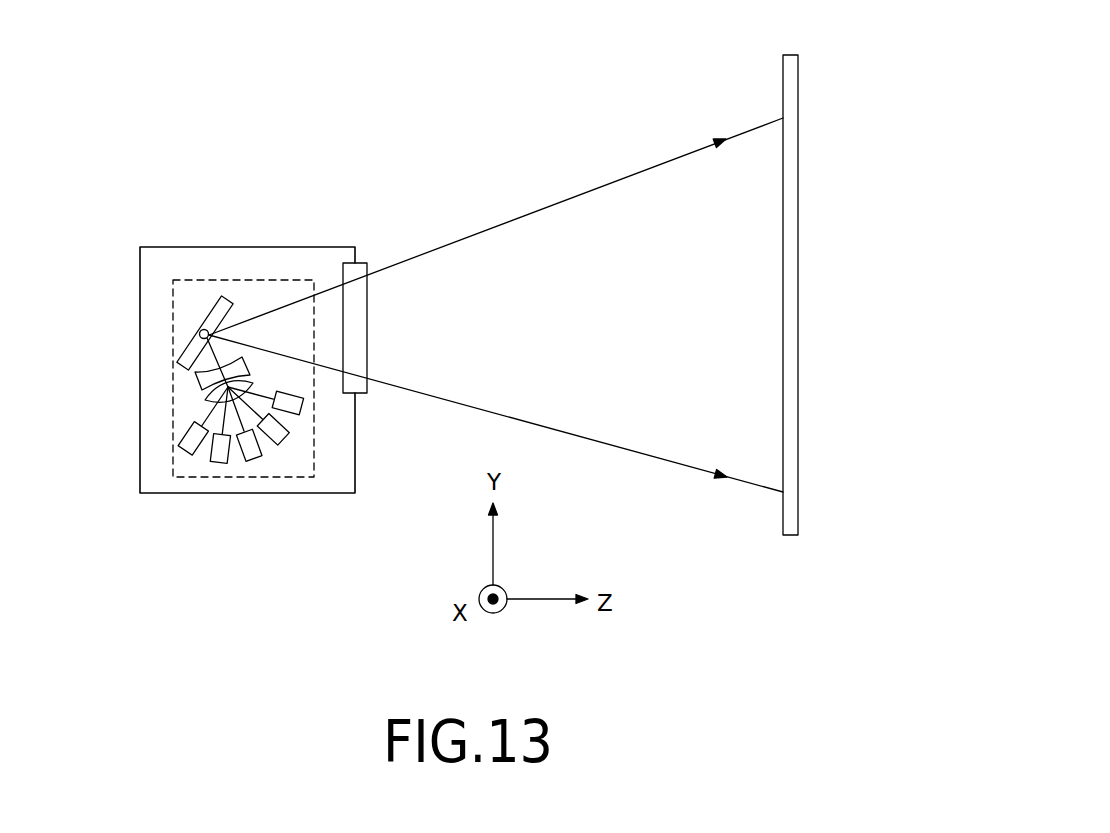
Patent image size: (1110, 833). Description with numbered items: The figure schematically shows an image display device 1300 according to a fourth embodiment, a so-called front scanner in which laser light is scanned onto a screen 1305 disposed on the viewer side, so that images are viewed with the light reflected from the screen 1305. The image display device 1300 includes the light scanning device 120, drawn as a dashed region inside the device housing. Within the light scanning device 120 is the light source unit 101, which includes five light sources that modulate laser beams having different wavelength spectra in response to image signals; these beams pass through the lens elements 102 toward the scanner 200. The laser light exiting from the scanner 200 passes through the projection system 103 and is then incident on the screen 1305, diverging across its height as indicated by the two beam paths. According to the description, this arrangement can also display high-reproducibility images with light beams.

The image display device 1300 is at (312, 181).
The light scanning device 120 is at (200, 278).
The scanner 200 is at (183, 361).
The lens unit 102 is at (190, 378).
The light source unit 101 is at (268, 458).
The projection system 103 is at (357, 392).
The screen 1305 is at (796, 54).